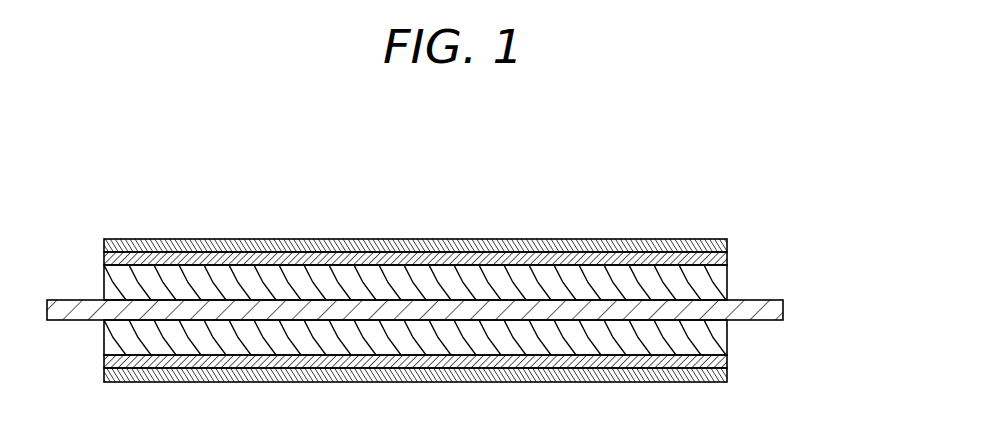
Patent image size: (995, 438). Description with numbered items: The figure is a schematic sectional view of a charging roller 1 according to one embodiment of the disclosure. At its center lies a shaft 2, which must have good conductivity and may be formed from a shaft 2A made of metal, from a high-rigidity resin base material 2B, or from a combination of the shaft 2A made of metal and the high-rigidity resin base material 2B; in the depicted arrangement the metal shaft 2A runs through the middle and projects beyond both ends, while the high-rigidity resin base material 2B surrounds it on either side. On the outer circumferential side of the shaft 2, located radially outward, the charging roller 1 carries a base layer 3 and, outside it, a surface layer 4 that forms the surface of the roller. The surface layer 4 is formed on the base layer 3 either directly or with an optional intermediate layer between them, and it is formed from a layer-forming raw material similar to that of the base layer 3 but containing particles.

The charging roller 1 is at (450, 255).
The shaft 2 is at (450, 291).
The shaft made of metal 2A is at (433, 292).
The high-rigidity resin base material 2B is at (715, 282).
The base layer 3 is at (292, 253).
The surface layer 4 is at (357, 247).